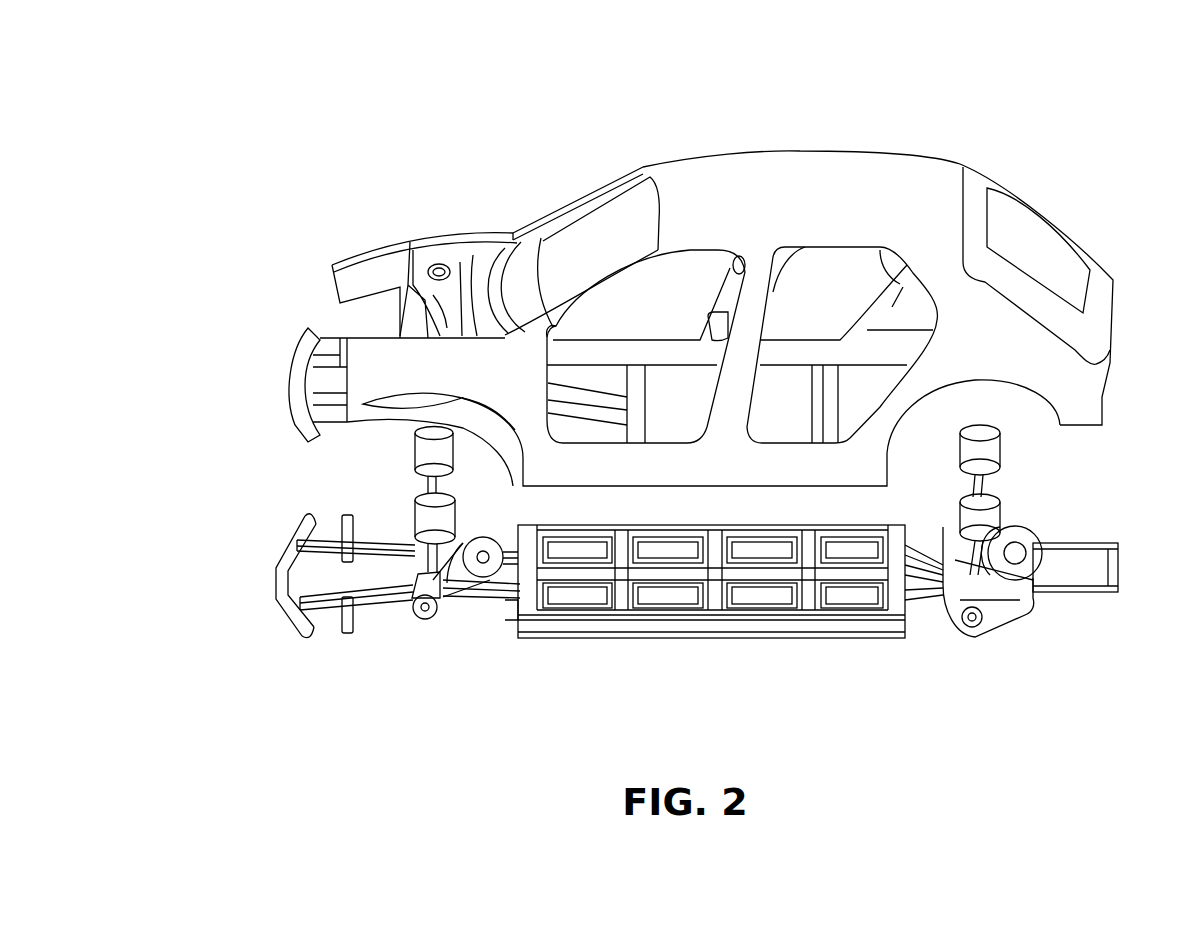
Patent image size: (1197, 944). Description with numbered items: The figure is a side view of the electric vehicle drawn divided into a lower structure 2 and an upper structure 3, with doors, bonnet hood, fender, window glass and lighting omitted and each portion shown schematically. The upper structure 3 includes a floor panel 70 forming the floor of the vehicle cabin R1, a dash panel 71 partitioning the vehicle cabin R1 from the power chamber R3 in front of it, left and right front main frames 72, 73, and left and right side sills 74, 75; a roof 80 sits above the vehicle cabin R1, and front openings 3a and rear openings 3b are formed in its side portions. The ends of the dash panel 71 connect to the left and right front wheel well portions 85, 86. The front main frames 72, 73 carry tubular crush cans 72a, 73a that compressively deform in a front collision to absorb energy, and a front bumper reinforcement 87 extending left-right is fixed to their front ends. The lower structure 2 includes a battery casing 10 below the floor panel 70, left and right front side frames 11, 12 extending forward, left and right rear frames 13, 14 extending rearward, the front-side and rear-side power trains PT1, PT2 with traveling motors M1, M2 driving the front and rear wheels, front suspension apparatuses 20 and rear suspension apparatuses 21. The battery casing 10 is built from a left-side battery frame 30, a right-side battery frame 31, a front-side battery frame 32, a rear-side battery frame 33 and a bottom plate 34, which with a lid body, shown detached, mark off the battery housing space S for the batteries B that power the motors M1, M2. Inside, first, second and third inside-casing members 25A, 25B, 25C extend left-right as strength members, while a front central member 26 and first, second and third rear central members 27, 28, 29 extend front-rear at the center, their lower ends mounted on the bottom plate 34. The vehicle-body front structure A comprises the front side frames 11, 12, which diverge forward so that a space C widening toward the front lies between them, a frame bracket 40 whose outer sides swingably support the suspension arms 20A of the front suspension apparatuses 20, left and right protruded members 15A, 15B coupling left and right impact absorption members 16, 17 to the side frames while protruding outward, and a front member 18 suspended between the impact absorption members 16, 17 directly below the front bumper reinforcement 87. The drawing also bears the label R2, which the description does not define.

The lower structure 2 is at (898, 520).
The upper structure 3 is at (642, 163).
The front opening 3a is at (553, 255).
The rear opening 3b is at (785, 290).
The battery casing 10 is at (583, 642).
The left front side frame 11 is at (382, 613).
The right front side frame 12 is at (363, 513).
The left rear frame 13 is at (1093, 592).
The right rear frame 14 is at (1100, 543).
The left protruded member 15A is at (357, 634).
The right protruded member 15B is at (338, 527).
The left impact absorption member 16 is at (322, 617).
The right impact absorption member 17 is at (322, 530).
The front member 18 is at (280, 585).
The front suspension apparatus 20 is at (420, 620).
The suspension arm 20A is at (452, 540).
The rear suspension apparatus 21 is at (1003, 622).
The first inside-casing member 25A is at (610, 612).
The second inside-casing member 25B is at (740, 612).
The third inside-casing member 25C is at (822, 612).
The front central member 26 is at (553, 595).
The first rear central member 27 is at (655, 590).
The second rear central member 28 is at (778, 590).
The third rear central member 29 is at (838, 590).
The left-side battery frame 30 is at (673, 625).
The right-side battery frame 31 is at (622, 528).
The front-side battery frame 32 is at (530, 545).
The rear-side battery frame 33 is at (897, 543).
The bottom plate 34 is at (862, 640).
The frame bracket 40 is at (513, 620).
The floor panel 70 is at (783, 390).
The dash panel 71 is at (462, 285).
The left front main frame 72 is at (387, 430).
The crush can 72a is at (297, 397).
The right front main frame 73 is at (330, 347).
The crush can 73a is at (313, 340).
The left side sill 74 is at (706, 478).
The right side sill 75 is at (640, 357).
The roof 80 is at (783, 180).
The left front wheel well portion 85 is at (480, 432).
The right front wheel well portion 86 is at (420, 268).
The front bumper reinforcement 87 is at (295, 365).
The vehicle-body front structure A is at (278, 630).
The batteries B is at (740, 600).
The space C is at (381, 612).
The front-side traveling motor M1 is at (490, 537).
The rear-side traveling motor M2 is at (1037, 522).
The front-side power train PT1 is at (457, 617).
The rear-side power train PT2 is at (1047, 567).
The vehicle cabin R1 is at (658, 412).
The rear region R2 is at (1060, 262).
The power chamber R3 is at (370, 530).
The battery housing space S is at (905, 640).